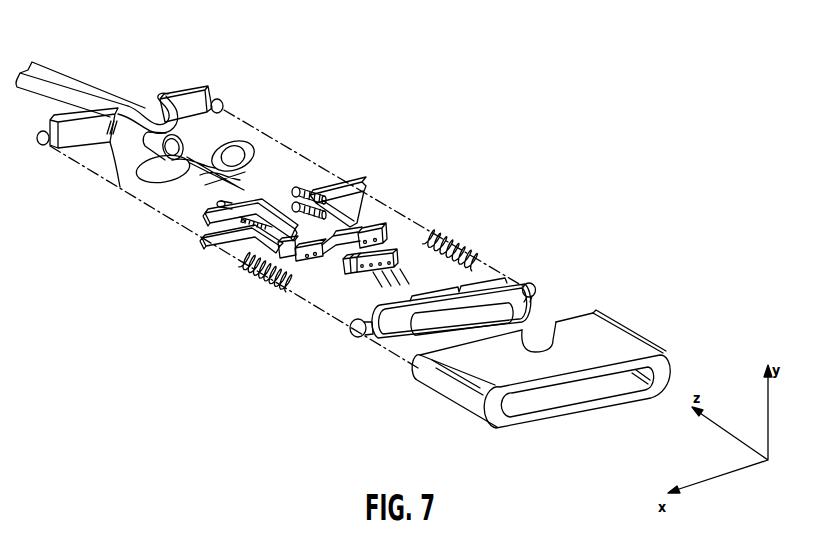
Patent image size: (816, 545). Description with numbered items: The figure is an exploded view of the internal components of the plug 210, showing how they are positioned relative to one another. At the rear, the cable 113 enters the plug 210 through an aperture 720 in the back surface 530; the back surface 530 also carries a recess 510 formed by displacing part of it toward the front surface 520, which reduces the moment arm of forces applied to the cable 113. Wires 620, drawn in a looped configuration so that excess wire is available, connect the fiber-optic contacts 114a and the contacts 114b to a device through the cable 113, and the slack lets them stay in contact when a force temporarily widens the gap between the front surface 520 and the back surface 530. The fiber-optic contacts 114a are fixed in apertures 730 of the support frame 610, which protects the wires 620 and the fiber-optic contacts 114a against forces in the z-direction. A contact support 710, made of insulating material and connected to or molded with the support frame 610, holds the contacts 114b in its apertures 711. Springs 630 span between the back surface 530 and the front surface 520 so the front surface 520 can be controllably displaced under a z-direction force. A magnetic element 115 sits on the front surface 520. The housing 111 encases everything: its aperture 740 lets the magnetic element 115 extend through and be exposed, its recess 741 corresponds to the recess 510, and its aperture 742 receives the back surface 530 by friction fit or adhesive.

The housing 111 is at (658, 356).
The cable 113 is at (73, 92).
The fiber-optic contacts 114a is at (302, 189).
The contacts 114b is at (377, 287).
The magnetic element 115 is at (534, 296).
The plug 210 is at (480, 97).
The recess 510 is at (150, 100).
The front surface 520 is at (529, 283).
The back surface 530 is at (187, 90).
The support frame 610 is at (363, 190).
The wires 620 is at (250, 152).
The springs 630 is at (467, 242).
The contact support 710 is at (338, 268).
The apertures 711 is at (343, 273).
The aperture 720 is at (148, 150).
The apertures 730 is at (387, 240).
The aperture 740 is at (586, 392).
The recess 741 is at (525, 348).
The aperture 742 is at (433, 337).